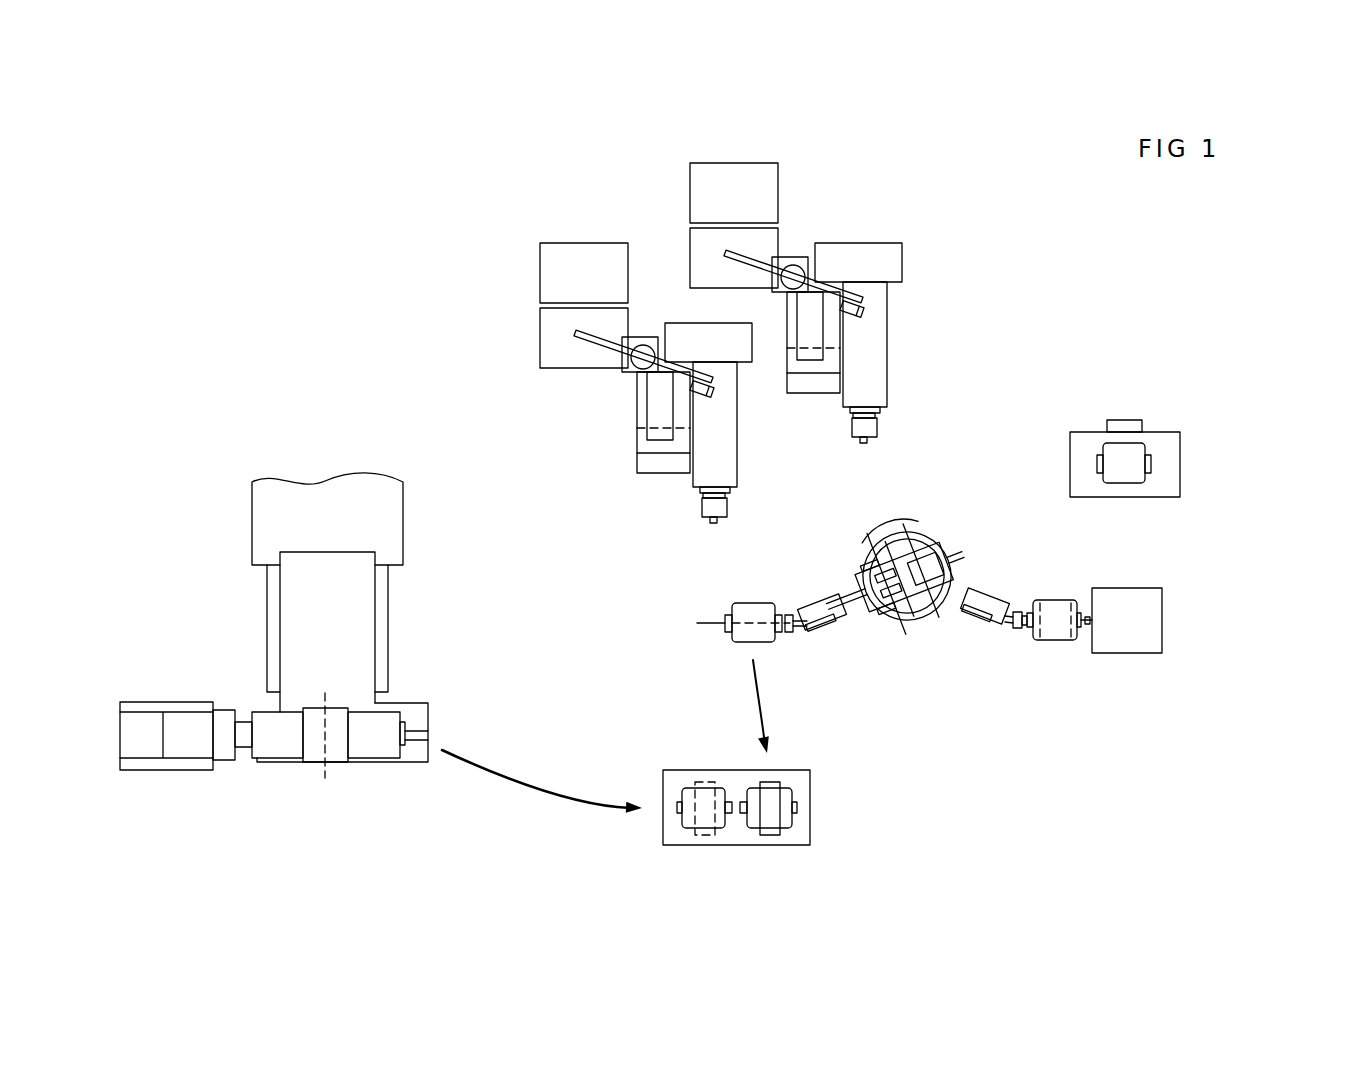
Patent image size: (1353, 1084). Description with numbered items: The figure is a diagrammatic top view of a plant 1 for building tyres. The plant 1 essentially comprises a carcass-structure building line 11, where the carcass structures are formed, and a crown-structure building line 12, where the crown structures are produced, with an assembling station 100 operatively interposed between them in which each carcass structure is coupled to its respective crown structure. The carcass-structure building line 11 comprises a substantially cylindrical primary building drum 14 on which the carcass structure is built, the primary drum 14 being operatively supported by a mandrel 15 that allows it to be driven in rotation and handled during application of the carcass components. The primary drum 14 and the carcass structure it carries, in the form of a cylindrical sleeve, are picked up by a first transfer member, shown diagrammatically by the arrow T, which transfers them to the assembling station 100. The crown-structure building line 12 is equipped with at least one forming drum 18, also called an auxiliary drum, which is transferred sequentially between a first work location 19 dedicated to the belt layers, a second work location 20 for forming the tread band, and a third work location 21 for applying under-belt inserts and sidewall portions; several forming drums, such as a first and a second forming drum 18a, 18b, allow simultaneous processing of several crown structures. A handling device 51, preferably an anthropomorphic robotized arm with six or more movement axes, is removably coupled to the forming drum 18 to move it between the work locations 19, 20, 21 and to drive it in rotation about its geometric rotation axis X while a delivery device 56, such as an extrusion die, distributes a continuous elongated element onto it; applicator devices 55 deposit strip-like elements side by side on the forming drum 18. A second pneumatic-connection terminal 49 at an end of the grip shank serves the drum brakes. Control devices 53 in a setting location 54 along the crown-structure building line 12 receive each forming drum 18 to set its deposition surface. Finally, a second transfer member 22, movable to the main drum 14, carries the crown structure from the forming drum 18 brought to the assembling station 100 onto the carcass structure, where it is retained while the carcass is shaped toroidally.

The plant 1 is at (390, 328).
The carcass-structure building line 11 is at (243, 582).
The crown-structure building line 12 is at (1062, 335).
The primary building drum 14 is at (318, 742).
The mandrel 15 is at (225, 752).
The forming drum 18 is at (1050, 600).
The first forming drum 18a is at (754, 612).
The second forming drum 18b is at (1128, 478).
The first work location 19 is at (1200, 455).
The second work location 20 is at (868, 365).
The third work location 21 is at (717, 452).
The second transfer member 22 is at (700, 838).
The second pneumatic-connection terminal 49 is at (1083, 628).
The handling device 51 is at (948, 520).
The control devices 53 is at (1088, 626).
The setting location 54 is at (1146, 631).
The applicator devices 55 is at (1130, 426).
The delivery device 56 is at (713, 523).
The assembling station 100 is at (670, 755).
The first transfer member T is at (500, 778).
The geometric rotation axis X is at (712, 626).